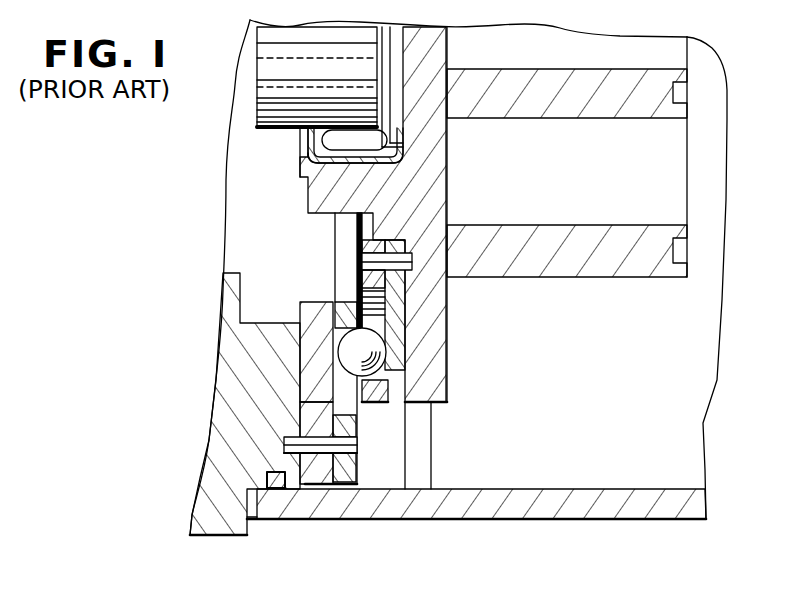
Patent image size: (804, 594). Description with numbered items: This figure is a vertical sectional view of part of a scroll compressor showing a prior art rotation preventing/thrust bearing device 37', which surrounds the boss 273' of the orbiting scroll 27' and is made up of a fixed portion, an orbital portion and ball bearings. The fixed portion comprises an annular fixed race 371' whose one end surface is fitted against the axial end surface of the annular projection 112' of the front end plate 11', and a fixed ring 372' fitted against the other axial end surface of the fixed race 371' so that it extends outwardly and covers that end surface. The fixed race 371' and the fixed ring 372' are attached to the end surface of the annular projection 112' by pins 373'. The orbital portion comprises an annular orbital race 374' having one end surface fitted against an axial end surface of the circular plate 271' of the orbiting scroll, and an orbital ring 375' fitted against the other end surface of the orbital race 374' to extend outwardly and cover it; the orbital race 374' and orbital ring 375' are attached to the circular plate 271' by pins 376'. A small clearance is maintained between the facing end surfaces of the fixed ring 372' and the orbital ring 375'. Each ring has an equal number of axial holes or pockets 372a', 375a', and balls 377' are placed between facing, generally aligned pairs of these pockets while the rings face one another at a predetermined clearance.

The front end plate 11' is at (233, 423).
The annular projection 112' is at (286, 512).
The orbiting scroll 27' is at (509, 296).
The circular plate 271' is at (558, 309).
The boss 273' is at (319, 112).
The rotation preventing/thrust bearing device 37' is at (336, 383).
The annular fixed race 371' is at (244, 352).
The fixed ring 372' is at (360, 484).
The pockets of fixed ring 372a' is at (240, 431).
The pins 373' is at (286, 436).
The annular orbital race 374' is at (425, 352).
The orbital ring 375' is at (435, 405).
The pockets of orbital ring 375a' is at (444, 305).
The pins 376' is at (476, 273).
The balls 377' is at (298, 273).